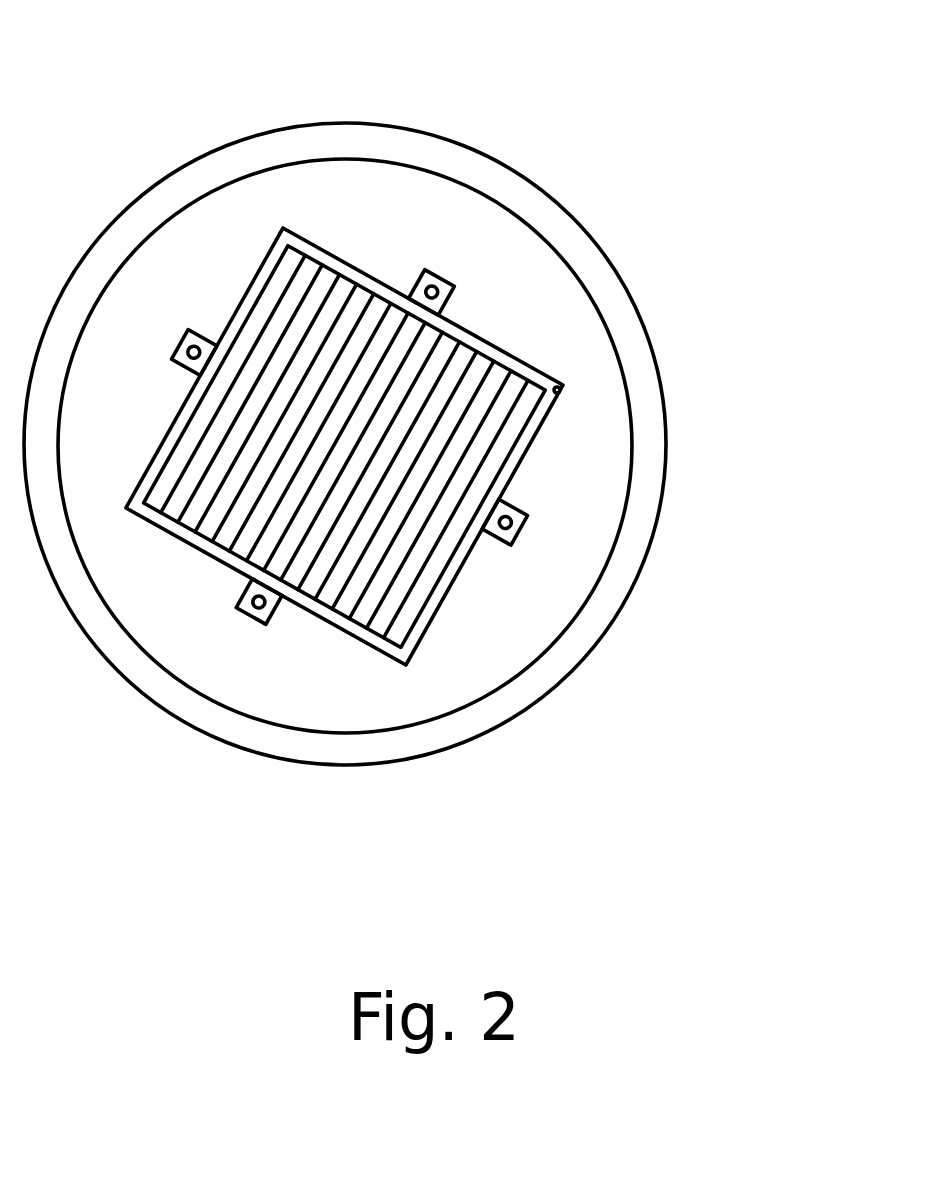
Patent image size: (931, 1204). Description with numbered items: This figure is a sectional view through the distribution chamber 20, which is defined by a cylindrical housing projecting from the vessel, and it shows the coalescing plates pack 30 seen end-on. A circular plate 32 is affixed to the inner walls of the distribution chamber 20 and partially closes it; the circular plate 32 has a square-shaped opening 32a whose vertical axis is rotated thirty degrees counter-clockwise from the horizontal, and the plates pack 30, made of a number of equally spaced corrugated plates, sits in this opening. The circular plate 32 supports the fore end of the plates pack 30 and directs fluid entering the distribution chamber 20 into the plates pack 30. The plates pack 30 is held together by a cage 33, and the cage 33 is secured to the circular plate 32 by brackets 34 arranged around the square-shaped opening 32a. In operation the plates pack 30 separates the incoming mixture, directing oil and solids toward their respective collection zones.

The distribution chamber 20 is at (470, 173).
The coalescing plates pack 30 is at (510, 457).
The circular plate 32 is at (403, 682).
The square-shaped opening 32a is at (397, 548).
The cage 33 is at (560, 387).
The brackets 34 is at (438, 290).